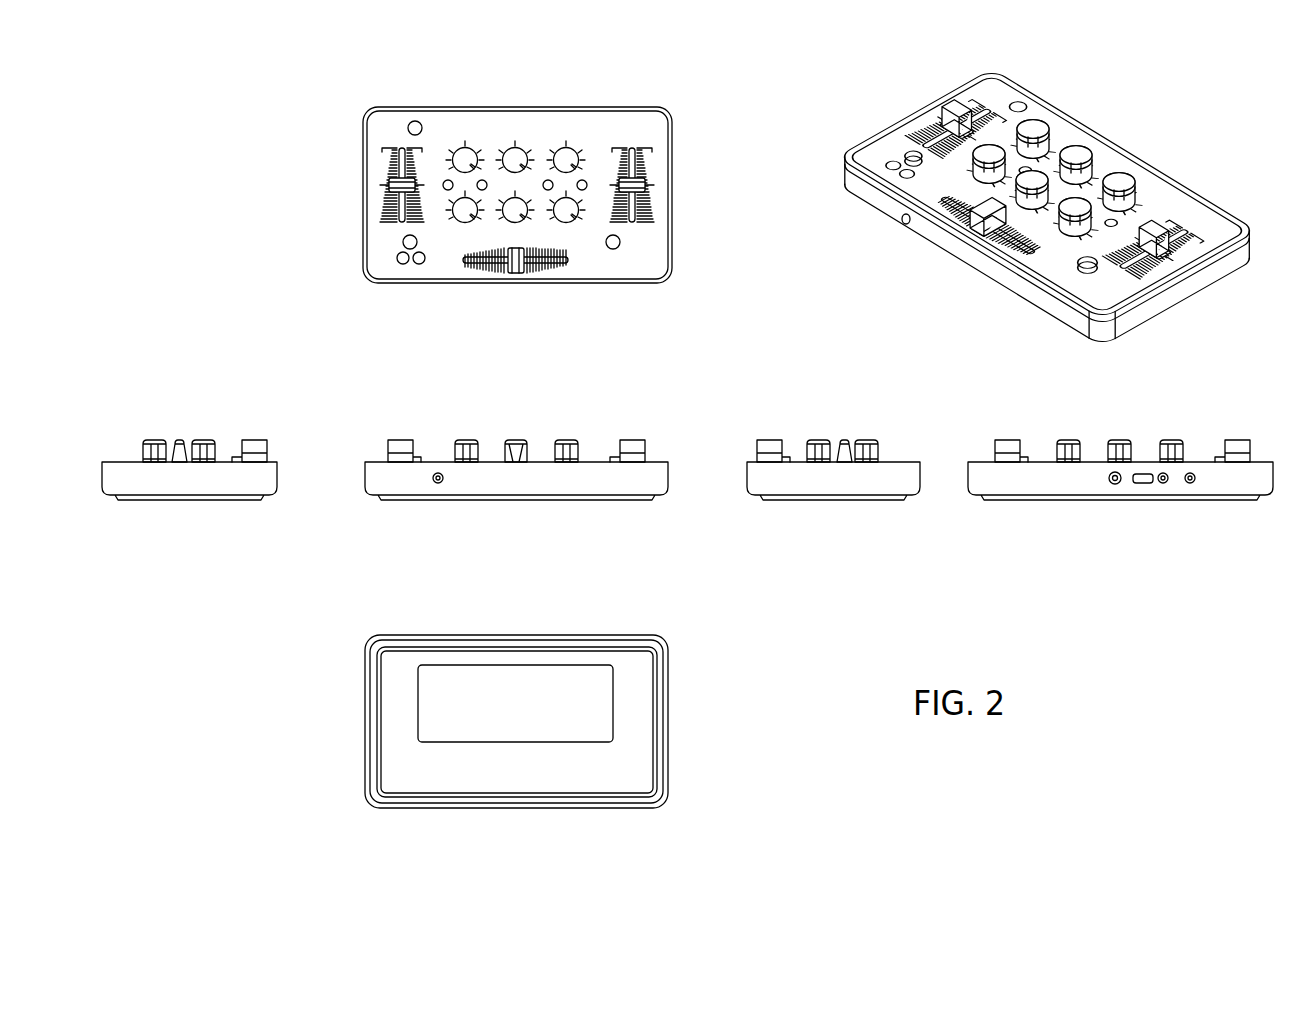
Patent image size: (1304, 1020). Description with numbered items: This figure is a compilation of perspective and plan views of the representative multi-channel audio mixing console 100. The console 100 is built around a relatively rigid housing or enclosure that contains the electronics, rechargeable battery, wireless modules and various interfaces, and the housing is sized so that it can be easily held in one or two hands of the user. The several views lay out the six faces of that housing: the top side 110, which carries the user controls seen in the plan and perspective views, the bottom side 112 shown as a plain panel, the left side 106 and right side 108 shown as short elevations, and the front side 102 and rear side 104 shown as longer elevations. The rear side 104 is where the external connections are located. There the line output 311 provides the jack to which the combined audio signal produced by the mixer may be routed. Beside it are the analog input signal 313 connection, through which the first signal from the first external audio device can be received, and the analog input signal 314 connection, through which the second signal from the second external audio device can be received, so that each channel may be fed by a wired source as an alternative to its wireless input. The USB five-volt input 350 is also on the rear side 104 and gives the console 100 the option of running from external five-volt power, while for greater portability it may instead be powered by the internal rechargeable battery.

The multi-channel audio mixing console 100 is at (468, 205).
The front side 102 is at (963, 257).
The rear side 104 is at (1120, 467).
The left side 106 is at (198, 482).
The right side 108 is at (868, 482).
The top side 110 is at (626, 252).
The bottom side 112 is at (607, 763).
The line output 311 is at (1115, 486).
The analog input signal 313 is at (1190, 471).
The analog input signal 314 is at (1163, 471).
The USB 5V input 350 is at (1143, 486).